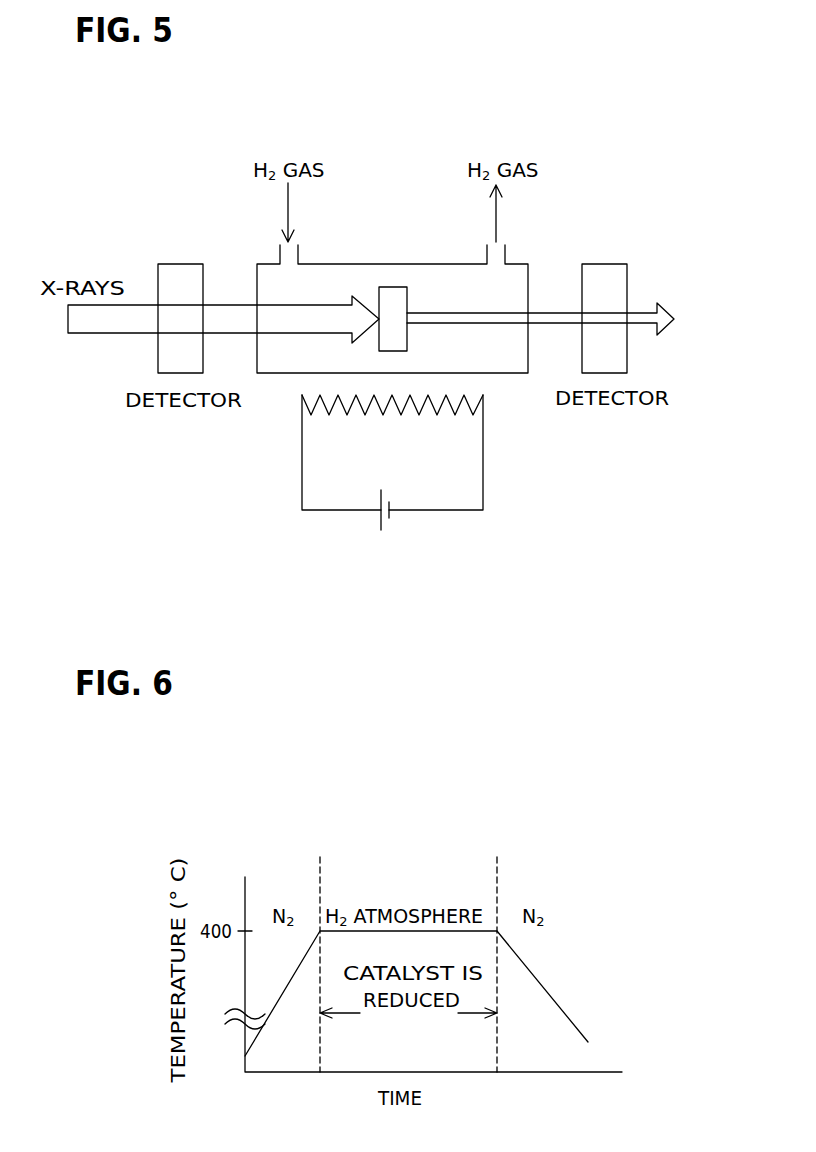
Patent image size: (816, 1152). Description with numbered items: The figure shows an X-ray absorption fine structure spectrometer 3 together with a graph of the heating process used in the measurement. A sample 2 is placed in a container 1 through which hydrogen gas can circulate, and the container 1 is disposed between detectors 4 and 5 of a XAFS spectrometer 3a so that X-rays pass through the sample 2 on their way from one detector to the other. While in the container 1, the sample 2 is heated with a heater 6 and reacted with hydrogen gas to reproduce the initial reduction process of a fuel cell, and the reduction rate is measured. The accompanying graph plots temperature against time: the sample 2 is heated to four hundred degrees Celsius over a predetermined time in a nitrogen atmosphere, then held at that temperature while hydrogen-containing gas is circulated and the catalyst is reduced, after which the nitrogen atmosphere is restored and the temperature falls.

The container 1 is at (384, 264).
The sample 2 is at (407, 302).
The spectrometer 3 is at (427, 233).
The XAFS spectrometer 3a is at (666, 271).
The detector 4 is at (181, 264).
The detector 5 is at (603, 264).
The heater 6 is at (447, 413).